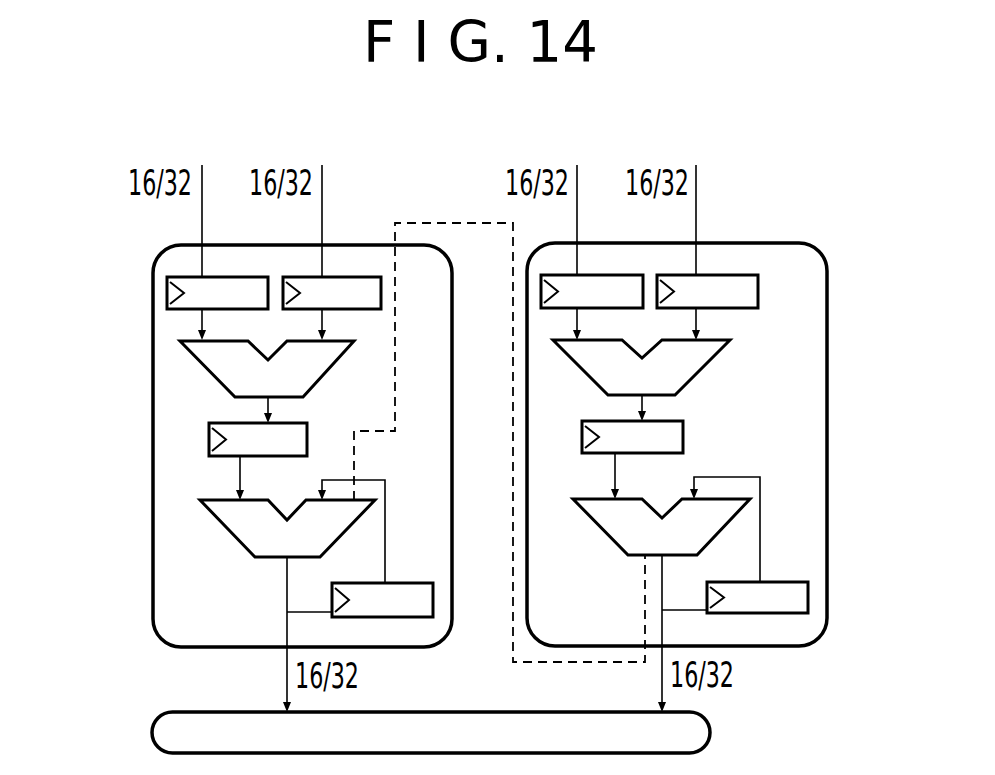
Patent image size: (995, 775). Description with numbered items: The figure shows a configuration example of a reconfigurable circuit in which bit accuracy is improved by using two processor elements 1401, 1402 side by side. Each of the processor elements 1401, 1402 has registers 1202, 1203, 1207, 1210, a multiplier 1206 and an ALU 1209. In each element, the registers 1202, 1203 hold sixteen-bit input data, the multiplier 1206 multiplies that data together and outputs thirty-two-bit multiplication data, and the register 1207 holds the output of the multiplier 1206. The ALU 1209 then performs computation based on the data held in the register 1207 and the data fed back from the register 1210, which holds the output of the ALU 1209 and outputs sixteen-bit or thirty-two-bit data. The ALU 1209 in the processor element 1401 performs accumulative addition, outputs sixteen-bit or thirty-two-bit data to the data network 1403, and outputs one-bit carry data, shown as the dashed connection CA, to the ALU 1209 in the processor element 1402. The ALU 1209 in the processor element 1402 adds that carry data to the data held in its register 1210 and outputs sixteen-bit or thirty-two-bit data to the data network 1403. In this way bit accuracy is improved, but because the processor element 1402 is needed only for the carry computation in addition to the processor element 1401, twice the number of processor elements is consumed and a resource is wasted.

The register 1202 is at (167, 292).
The register 1203 is at (357, 277).
The multiplier 1206 is at (202, 363).
The register 1207 is at (209, 440).
The ALU 1209 is at (227, 532).
The register 1210 is at (375, 617).
The processor element 1401 is at (827, 415).
The processor element 1402 is at (153, 428).
The data network 1403 is at (710, 728).
The carry connection CA is at (435, 222).